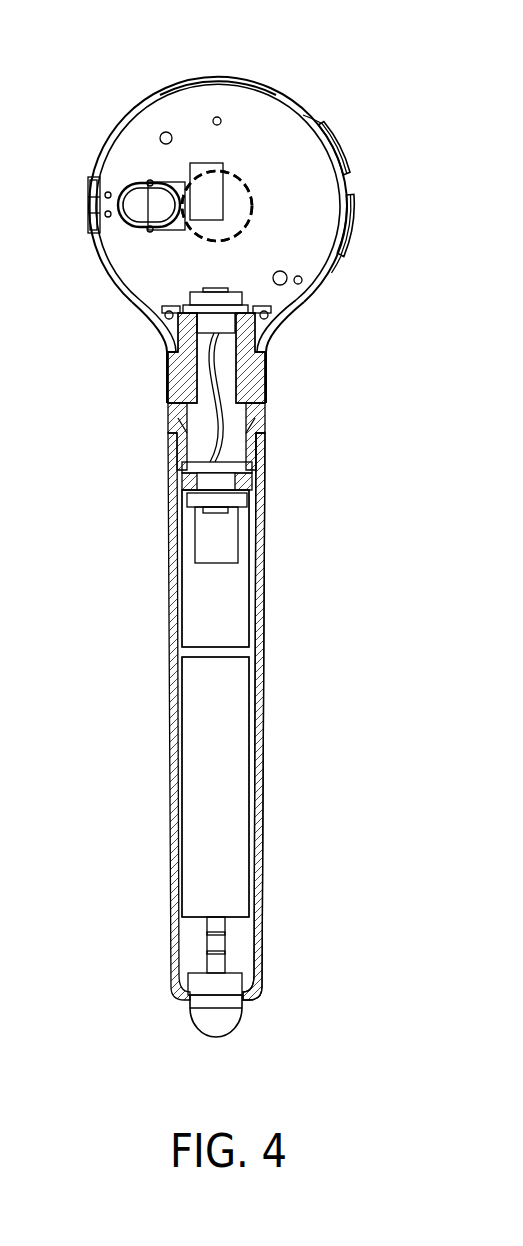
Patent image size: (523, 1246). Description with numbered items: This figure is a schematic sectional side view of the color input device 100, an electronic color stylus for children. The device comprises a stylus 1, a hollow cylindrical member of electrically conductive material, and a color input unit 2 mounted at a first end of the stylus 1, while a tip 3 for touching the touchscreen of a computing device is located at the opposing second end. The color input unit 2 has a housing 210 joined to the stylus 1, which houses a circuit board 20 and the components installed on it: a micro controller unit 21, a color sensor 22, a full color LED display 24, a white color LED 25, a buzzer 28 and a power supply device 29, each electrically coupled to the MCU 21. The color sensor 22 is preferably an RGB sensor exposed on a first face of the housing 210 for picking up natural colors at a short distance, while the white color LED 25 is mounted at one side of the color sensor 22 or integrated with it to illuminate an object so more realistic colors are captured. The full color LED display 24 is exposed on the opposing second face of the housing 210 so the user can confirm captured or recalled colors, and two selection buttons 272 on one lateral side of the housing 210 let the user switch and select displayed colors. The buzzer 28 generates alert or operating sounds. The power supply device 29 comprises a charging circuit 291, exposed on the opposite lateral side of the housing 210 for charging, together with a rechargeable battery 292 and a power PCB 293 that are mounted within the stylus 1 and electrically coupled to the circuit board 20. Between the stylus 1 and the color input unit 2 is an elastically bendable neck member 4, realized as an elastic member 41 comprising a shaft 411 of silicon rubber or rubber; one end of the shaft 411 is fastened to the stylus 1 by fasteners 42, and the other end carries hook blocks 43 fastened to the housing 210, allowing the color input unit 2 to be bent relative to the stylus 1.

The stylus 1 is at (262, 680).
The color input device 100 is at (263, 790).
The color input unit 2 is at (200, 77).
The circuit board 20 is at (170, 87).
The micro controller unit (MCU) 21 is at (190, 163).
The housing 210 is at (243, 78).
The color sensor 22 is at (237, 170).
The full color LED display 24 is at (148, 205).
The white color LED 25 is at (252, 202).
The selection button 272 is at (333, 142).
The buzzer 28 is at (208, 538).
The power supply device 29 is at (173, 773).
The charging circuit 291 is at (95, 200).
The battery 292 is at (205, 712).
The power PCB 293 is at (205, 598).
The tip 3 is at (208, 1022).
The neck member 4 is at (266, 367).
The elastic member 41 is at (255, 385).
The shaft 411 is at (178, 387).
The fastener 42 is at (167, 448).
The hook block 43 is at (165, 318).